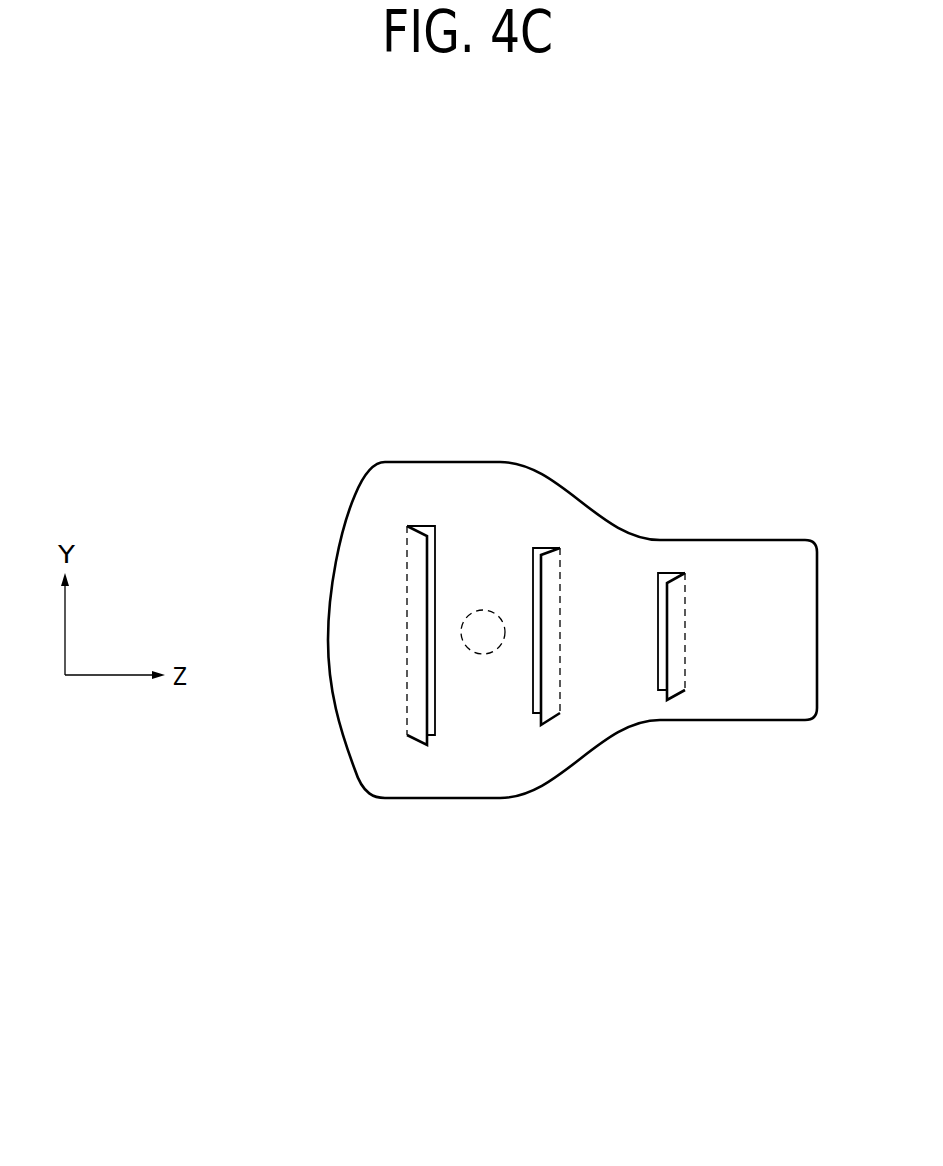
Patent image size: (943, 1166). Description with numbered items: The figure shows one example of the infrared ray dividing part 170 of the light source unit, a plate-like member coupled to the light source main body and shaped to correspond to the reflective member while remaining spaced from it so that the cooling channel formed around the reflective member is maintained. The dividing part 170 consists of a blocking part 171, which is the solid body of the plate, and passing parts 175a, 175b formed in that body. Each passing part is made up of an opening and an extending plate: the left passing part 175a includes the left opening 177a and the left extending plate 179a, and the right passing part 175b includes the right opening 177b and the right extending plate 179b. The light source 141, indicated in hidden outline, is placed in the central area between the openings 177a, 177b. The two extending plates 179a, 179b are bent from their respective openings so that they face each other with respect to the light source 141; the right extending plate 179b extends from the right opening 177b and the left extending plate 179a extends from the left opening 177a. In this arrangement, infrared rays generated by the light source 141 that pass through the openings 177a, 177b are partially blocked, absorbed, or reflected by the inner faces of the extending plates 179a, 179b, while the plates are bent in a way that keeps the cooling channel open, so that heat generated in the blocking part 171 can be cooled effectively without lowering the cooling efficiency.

The infrared ray dividing part 170 is at (245, 485).
The blocking part 171 is at (535, 755).
The light source 141 is at (483, 610).
The passing part 175a is at (467, 943).
The left opening 177a is at (435, 712).
The left extending plate 179a is at (427, 745).
The passing part 175b is at (727, 847).
The right opening 177b is at (547, 664).
The right extending plate 179b is at (553, 717).